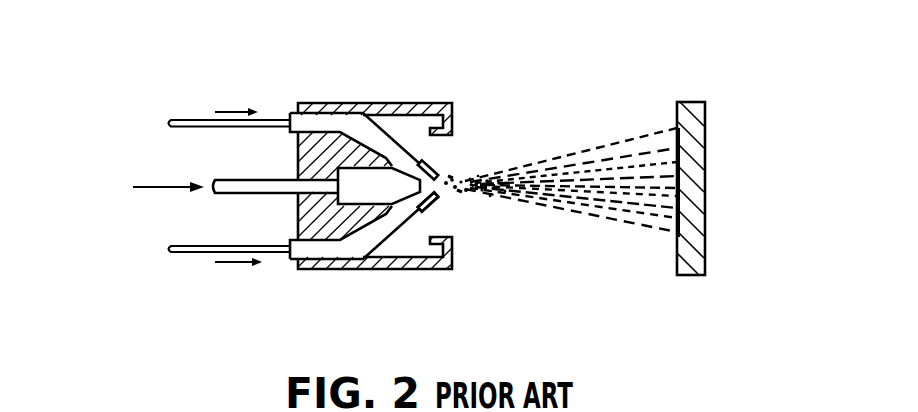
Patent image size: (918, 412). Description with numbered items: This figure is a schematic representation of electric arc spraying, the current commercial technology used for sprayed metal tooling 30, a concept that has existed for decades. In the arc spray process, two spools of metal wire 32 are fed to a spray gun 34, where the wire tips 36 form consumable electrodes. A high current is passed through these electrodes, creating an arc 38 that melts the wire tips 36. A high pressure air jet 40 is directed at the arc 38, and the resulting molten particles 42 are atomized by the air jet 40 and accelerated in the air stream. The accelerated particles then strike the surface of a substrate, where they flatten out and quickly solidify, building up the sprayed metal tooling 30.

The sprayed metal tooling 30 is at (153, 82).
The metal wire 32 is at (180, 123).
The spray gun 34 is at (372, 130).
The wire tips 36 is at (443, 192).
The arc 38 is at (452, 177).
The high pressure air jet 40 is at (157, 190).
The molten particles 42 is at (543, 192).